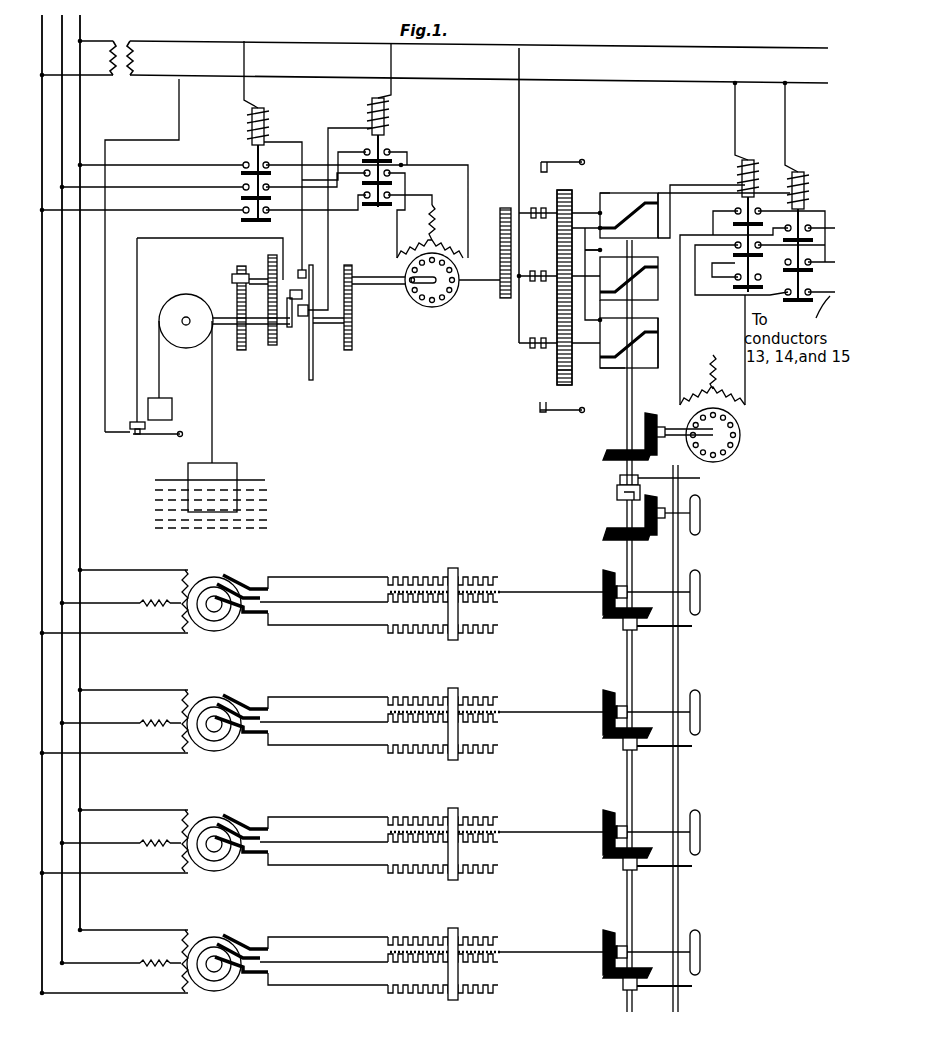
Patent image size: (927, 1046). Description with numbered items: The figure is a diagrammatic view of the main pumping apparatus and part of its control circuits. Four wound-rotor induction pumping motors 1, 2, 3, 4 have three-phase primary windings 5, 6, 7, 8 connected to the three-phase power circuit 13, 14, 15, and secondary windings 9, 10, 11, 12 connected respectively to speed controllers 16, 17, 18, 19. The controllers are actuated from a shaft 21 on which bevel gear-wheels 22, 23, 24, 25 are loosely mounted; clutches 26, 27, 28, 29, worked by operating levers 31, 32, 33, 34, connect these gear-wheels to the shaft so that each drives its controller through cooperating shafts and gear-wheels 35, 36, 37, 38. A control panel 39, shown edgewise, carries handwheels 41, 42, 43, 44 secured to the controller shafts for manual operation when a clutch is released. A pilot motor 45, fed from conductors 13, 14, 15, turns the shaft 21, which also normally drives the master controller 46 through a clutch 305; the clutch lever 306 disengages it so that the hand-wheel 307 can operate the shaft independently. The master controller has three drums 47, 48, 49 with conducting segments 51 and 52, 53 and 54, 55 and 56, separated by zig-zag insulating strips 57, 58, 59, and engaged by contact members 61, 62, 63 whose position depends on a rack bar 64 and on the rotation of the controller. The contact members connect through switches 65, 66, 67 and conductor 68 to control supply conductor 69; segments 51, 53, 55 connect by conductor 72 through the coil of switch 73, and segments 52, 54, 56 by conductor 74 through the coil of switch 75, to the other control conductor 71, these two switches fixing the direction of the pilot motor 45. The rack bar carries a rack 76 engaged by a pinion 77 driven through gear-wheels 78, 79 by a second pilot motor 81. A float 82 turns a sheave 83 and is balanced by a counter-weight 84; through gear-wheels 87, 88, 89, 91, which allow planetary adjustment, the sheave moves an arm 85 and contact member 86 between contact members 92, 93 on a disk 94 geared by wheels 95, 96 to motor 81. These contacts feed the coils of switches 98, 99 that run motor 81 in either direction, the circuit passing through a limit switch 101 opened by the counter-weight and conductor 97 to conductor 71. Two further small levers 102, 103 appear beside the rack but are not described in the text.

The pumping motor 1 is at (213, 575).
The pumping motor 2 is at (154, 716).
The pumping motor 3 is at (154, 836).
The pumping motor 4 is at (154, 956).
The three-phase primary winding 5 is at (170, 600).
The three-phase primary winding 6 is at (155, 713).
The three-phase primary winding 7 is at (155, 833).
The three-phase primary winding 8 is at (155, 953).
The secondary winding 9 is at (228, 621).
The secondary winding 10 is at (223, 730).
The secondary winding 11 is at (223, 850).
The secondary winding 12 is at (223, 970).
The power circuit conductor 13 is at (44, 483).
The power circuit conductor 14 is at (64, 506).
The power circuit conductor 15 is at (82, 531).
The controller 16 is at (497, 578).
The controller 17 is at (475, 715).
The controller 18 is at (475, 835).
The controller 19 is at (475, 955).
The shaft 21 is at (634, 800).
The bevel gear-wheel 22 is at (608, 620).
The bevel gear-wheel 23 is at (615, 742).
The bevel gear-wheel 24 is at (615, 862).
The bevel gear-wheel 25 is at (615, 982).
The clutch 26 is at (624, 632).
The clutch 27 is at (613, 759).
The clutch 28 is at (613, 879).
The clutch 29 is at (613, 999).
The operating lever 31 is at (694, 626).
The operating lever 32 is at (683, 748).
The operating lever 33 is at (683, 868).
The operating lever 34 is at (683, 988).
The gear-wheel 35 is at (604, 577).
The gear-wheel 36 is at (598, 708).
The gear-wheel 37 is at (598, 828).
The gear-wheel 38 is at (598, 948).
The control panel 39 is at (680, 665).
The handwheel 41 is at (700, 592).
The handwheel 42 is at (712, 712).
The handwheel 43 is at (712, 832).
The handwheel 44 is at (712, 952).
The pilot motor 45 is at (777, 455).
The master controller 46 is at (633, 186).
The control drum 47 is at (661, 388).
The control drum 48 is at (660, 300).
The control drum 49 is at (689, 215).
The conducting segment 51 is at (660, 341).
The conducting segment 52 is at (613, 370).
The conducting segment 53 is at (620, 301).
The conducting segment 54 is at (606, 258).
The conducting segment 55 is at (658, 228).
The conducting segment 56 is at (600, 193).
The insulating strip 57 is at (627, 352).
The insulating strip 58 is at (625, 287).
The insulating strip 59 is at (618, 228).
The contact member 61 is at (628, 340).
The contact member 62 is at (630, 281).
The contact member 63 is at (628, 217).
The rack bar 64 is at (555, 372).
The switch 65 is at (538, 337).
The switch 66 is at (540, 266).
The switch 67 is at (538, 207).
The conductor 68 is at (521, 122).
The control supply-circuit conductor 69 is at (597, 44).
The control supply-circuit conductor 71 is at (600, 81).
The conductor 72 is at (670, 185).
The switch 73 is at (761, 151).
The conductor 74 is at (708, 192).
The switch 75 is at (823, 161).
The rack 76 is at (557, 298).
The pinion 77 is at (572, 224).
The gear-wheel 78 is at (505, 208).
The gear-wheel 79 is at (503, 296).
The pilot motor 81 is at (488, 270).
The float 82 is at (238, 474).
The sheave 83 is at (185, 349).
The counter-weight 84 is at (172, 405).
The arm 85 is at (290, 330).
The contact member 86 is at (303, 294).
The gear-wheel 87 is at (242, 352).
The gear-wheel 88 is at (232, 276).
The gear-wheel 89 is at (270, 262).
The gear-wheel 91 is at (272, 347).
The contact member 92 is at (307, 272).
The contact member 93 is at (306, 318).
The disk 94 is at (313, 378).
The gear-wheel 95 is at (352, 340).
The gear-wheel 96 is at (354, 290).
The conductor 97 is at (177, 115).
The switch 98 is at (300, 117).
The switch 99 is at (427, 118).
The limit switch 101 is at (137, 441).
The contact lever 102 is at (575, 152).
The contact lever 103 is at (572, 414).
The clutch 305 is at (604, 503).
The clutch lever 306 is at (702, 480).
The hand-wheel 307 is at (701, 516).